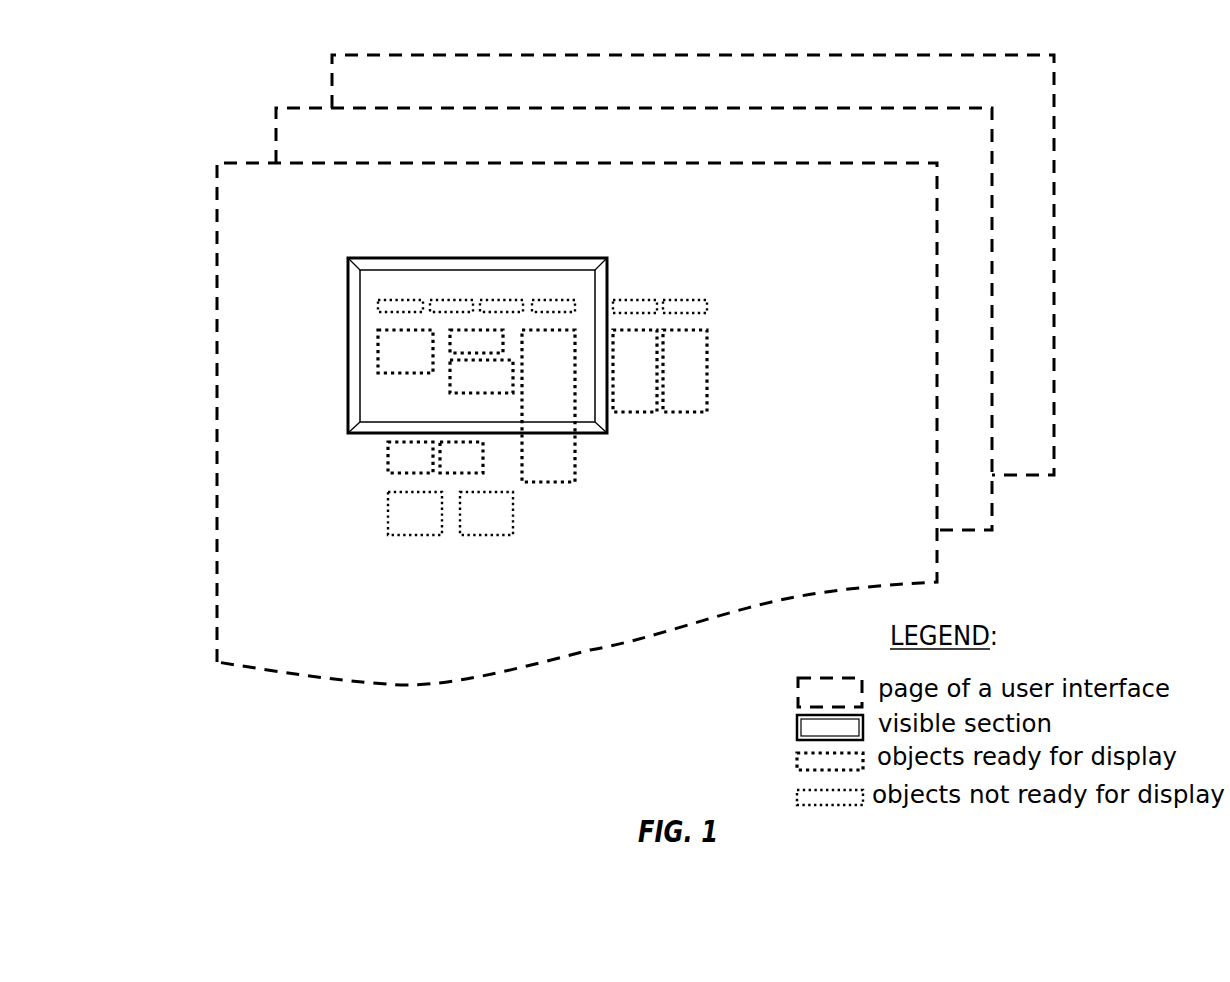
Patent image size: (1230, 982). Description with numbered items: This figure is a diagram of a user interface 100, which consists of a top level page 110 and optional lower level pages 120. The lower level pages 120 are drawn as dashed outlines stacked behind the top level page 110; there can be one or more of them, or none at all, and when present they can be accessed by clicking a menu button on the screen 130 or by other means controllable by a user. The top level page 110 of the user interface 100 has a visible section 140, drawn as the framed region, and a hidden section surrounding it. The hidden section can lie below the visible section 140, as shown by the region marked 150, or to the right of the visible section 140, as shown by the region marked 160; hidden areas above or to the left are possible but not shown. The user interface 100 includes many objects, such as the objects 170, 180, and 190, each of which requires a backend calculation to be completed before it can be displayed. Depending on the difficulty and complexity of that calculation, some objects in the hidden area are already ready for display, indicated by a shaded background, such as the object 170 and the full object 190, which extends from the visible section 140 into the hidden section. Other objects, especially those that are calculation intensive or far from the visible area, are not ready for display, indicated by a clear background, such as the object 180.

The user interface 100 is at (187, 124).
The top level page 110 is at (215, 205).
The lower level pages 120 is at (1053, 239).
The screen 130 is at (347, 345).
The visible section 140 is at (470, 280).
The hidden section below visible section 150 is at (462, 575).
The hidden section to the right of visible section 160 is at (665, 453).
The object ready for display 170 is at (387, 458).
The object not ready for display 180 is at (387, 518).
The object ready for display 190 is at (553, 480).